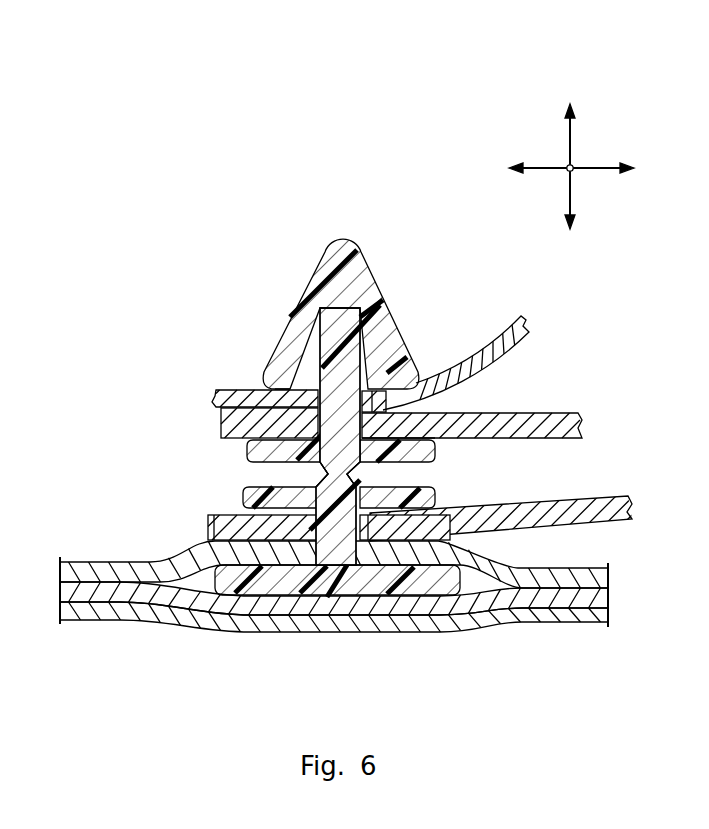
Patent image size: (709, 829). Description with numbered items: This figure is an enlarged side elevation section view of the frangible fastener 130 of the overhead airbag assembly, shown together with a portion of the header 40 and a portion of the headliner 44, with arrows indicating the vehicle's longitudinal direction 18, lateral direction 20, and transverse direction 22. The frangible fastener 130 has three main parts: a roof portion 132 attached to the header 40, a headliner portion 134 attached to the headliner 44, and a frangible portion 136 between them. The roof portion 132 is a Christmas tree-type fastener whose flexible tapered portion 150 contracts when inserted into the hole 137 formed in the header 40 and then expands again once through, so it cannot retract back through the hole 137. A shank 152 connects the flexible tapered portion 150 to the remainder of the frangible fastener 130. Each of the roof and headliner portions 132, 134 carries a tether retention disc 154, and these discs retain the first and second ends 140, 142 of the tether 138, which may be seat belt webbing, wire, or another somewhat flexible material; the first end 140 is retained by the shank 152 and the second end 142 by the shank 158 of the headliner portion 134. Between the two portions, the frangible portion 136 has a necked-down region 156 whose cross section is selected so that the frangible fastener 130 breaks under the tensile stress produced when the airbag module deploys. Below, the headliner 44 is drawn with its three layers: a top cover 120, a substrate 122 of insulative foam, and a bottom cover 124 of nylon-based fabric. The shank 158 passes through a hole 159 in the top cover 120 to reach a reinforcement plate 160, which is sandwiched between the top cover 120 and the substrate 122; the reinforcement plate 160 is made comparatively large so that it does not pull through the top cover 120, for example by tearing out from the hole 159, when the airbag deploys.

The longitudinal direction 18 is at (597, 168).
The lateral direction 20 is at (565, 177).
The transverse direction 22 is at (575, 132).
The header 40 is at (226, 390).
The headliner 44 is at (363, 612).
The top cover 120 is at (580, 573).
The substrate 122 is at (585, 603).
The bottom cover 124 is at (552, 622).
The frangible fastener 130 is at (365, 404).
The roof portion 132 is at (413, 309).
The headliner portion 134 is at (363, 600).
The frangible portion 136 is at (466, 461).
The hole 137 is at (313, 383).
The tether 138 is at (513, 420).
The first end 140 is at (222, 418).
The second end 142 is at (188, 502).
The flexible tapered portion 150 is at (317, 270).
The shank 152 is at (352, 360).
The tether retention disc 154 is at (247, 443).
The necked-down region 156 is at (326, 472).
The shank 158 is at (368, 548).
The hole 159 is at (208, 526).
The reinforcement plate 160 is at (262, 588).